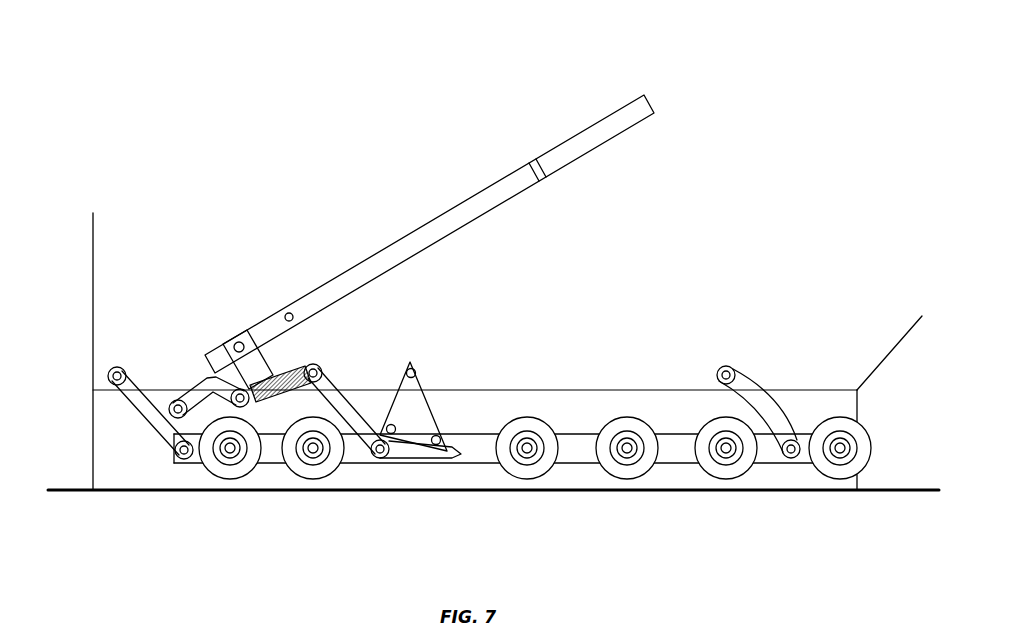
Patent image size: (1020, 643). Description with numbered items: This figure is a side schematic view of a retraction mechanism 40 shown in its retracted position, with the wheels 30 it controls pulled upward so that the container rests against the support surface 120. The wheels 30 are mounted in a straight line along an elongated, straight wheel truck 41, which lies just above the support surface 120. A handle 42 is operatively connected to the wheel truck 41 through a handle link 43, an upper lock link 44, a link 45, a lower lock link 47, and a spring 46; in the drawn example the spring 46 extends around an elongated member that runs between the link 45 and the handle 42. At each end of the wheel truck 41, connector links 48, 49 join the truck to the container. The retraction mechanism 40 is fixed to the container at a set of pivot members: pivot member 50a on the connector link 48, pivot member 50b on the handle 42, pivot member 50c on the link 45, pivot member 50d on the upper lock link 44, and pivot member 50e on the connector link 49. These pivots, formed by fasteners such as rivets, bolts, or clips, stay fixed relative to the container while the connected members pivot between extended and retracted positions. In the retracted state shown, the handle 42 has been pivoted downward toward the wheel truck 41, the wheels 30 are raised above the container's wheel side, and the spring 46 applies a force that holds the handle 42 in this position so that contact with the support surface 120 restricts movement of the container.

The retraction mechanism 40 is at (810, 100).
The support surface 120 is at (887, 490).
The wheel truck 41 is at (478, 455).
The wheels 30 is at (287, 475).
The handle 42 is at (402, 243).
The spring 46 is at (253, 343).
The connector link 48 is at (143, 412).
The handle link 43 is at (353, 382).
The link 45 is at (355, 422).
The upper lock link 44 is at (437, 408).
The lower lock link 47 is at (408, 452).
The connector link 49 is at (768, 407).
The pivot member 50a is at (108, 377).
The pivot member 50b is at (173, 403).
The pivot member 50c is at (320, 358).
The pivot member 50d is at (420, 367).
The pivot member 50e is at (728, 370).